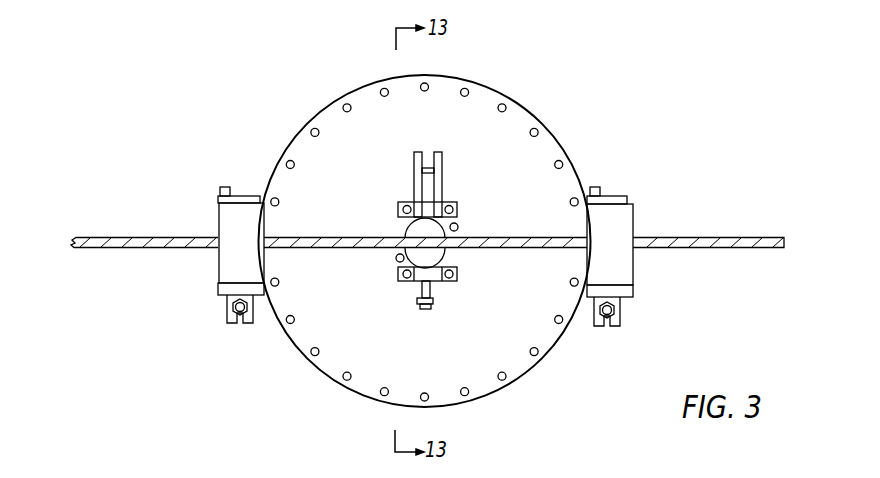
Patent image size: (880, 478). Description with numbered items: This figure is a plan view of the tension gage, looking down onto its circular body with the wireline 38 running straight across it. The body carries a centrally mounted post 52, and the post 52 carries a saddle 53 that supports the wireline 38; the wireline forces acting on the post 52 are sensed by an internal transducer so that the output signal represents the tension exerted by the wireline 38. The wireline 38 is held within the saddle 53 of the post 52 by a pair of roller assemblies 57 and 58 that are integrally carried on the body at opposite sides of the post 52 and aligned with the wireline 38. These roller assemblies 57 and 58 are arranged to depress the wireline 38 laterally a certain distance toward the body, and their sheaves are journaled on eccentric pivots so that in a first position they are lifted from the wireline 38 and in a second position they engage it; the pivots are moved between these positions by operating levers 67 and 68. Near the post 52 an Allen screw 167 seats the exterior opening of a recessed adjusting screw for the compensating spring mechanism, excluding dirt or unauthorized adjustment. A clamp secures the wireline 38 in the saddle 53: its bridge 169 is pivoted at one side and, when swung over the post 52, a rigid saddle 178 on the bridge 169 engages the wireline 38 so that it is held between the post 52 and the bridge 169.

The wireline 38 is at (738, 248).
The post 52 is at (415, 230).
The saddle 53 is at (446, 244).
The roller assembly 57 is at (237, 264).
The roller assembly 58 is at (622, 269).
The operating lever 67 is at (225, 187).
The operating lever 68 is at (597, 187).
The Allen screw 167 is at (460, 228).
The bridge 169 is at (440, 158).
The rigid saddle 178 is at (415, 177).